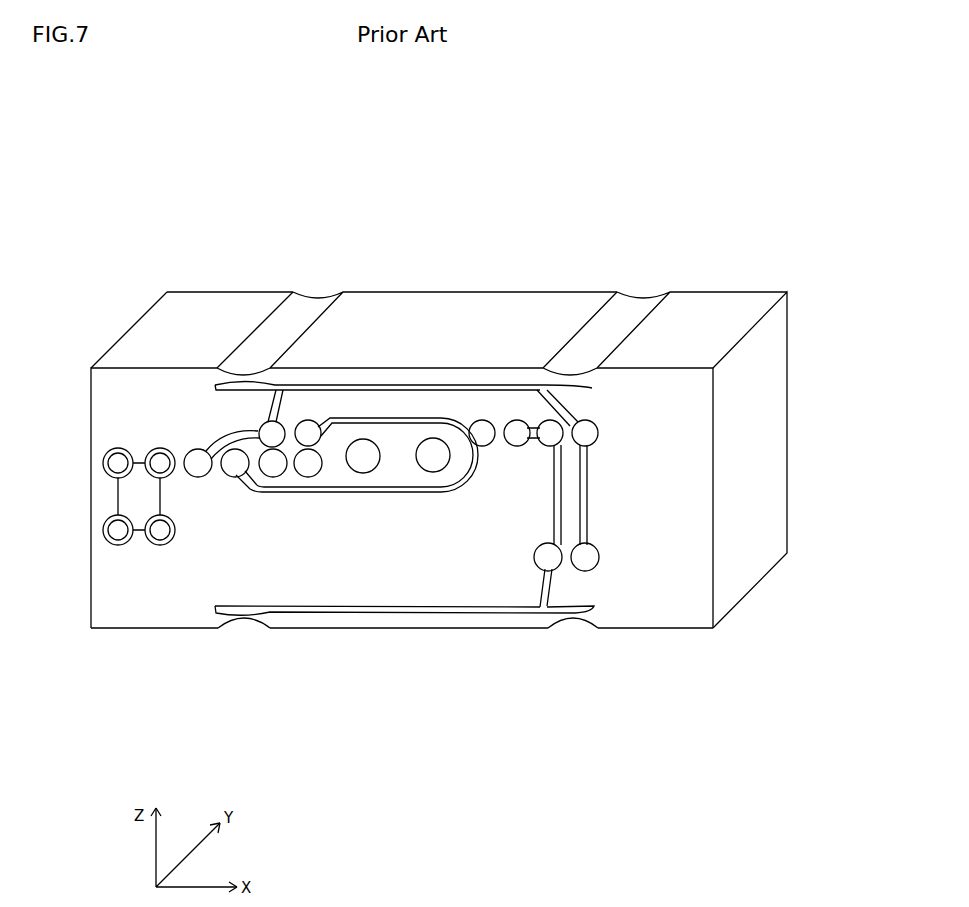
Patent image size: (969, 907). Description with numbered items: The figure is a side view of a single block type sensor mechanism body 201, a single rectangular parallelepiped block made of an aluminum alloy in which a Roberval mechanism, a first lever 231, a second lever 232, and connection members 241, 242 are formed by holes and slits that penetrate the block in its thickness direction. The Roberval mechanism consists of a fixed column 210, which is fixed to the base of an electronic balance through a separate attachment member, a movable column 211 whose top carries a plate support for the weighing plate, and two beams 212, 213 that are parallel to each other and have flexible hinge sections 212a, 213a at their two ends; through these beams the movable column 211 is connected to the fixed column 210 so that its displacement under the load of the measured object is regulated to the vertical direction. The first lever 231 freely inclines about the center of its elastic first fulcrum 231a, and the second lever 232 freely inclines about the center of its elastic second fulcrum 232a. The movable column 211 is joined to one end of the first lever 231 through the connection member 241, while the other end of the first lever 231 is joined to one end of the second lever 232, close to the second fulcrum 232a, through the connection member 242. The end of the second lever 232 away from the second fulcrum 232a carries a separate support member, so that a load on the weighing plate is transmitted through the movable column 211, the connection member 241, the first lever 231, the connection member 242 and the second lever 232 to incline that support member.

The sensor mechanism body 201 is at (445, 142).
The fixed column 210 is at (147, 595).
The movable column 211 is at (668, 593).
The beam 212 is at (397, 620).
The flexible section 212a is at (246, 620).
The beam 213 is at (478, 323).
The flexible section 213a is at (265, 342).
The first lever 231 is at (363, 407).
The first fulcrum 231a is at (497, 407).
The second lever 232 is at (405, 440).
The second fulcrum 232a is at (213, 458).
The connection member 241 is at (570, 517).
The connection member 242 is at (292, 447).